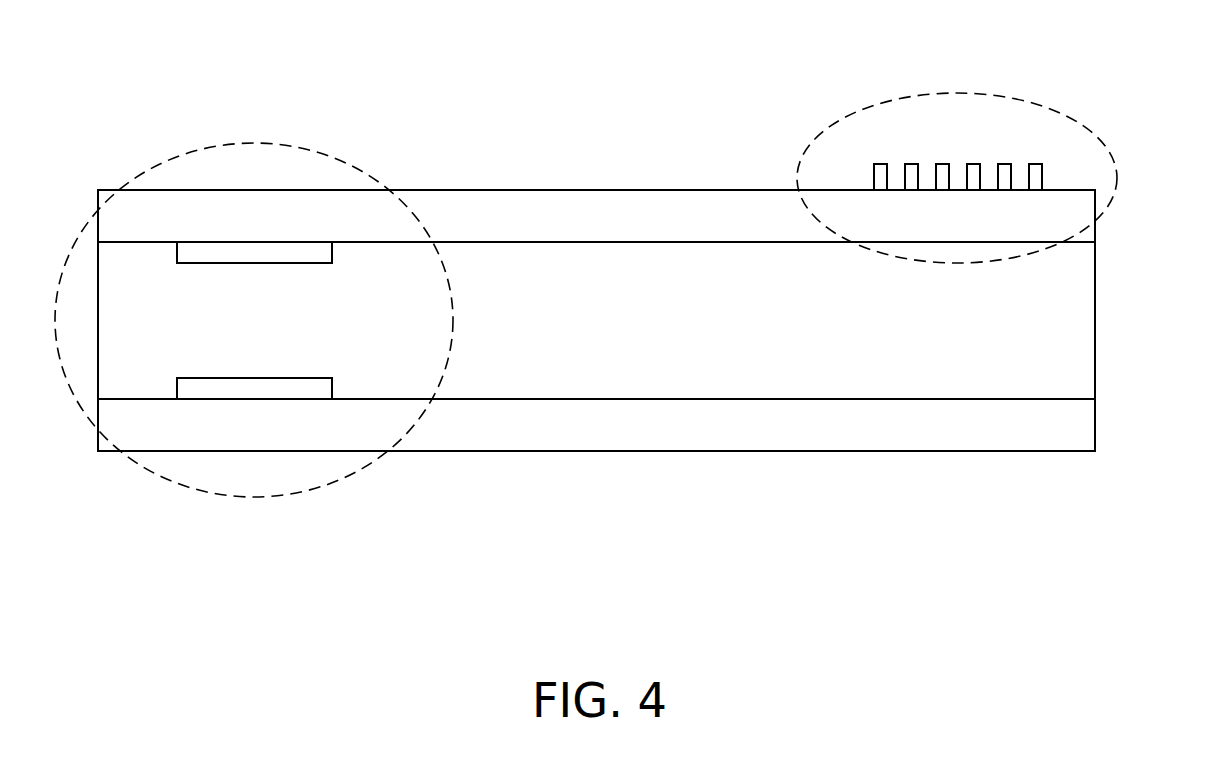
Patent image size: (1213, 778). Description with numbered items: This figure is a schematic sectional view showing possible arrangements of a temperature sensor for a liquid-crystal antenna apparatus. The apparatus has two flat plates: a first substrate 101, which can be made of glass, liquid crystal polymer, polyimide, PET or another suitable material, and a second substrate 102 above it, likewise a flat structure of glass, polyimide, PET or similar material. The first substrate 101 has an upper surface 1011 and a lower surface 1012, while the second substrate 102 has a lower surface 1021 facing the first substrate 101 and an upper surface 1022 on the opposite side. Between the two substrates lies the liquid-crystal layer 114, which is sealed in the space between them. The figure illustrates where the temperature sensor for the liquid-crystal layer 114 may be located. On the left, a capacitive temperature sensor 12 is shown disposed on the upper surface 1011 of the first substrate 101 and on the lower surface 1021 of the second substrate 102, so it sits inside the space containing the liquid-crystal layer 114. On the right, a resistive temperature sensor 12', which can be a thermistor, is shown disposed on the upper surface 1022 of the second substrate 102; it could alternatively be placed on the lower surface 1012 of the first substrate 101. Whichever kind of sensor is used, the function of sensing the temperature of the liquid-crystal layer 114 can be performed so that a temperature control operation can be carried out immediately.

The capacitive temperature sensor 12 is at (254, 282).
The resistive temperature sensor 12' is at (957, 140).
The second substrate 102 is at (624, 217).
The upper surface of the second substrate 1022 is at (524, 190).
The lower surface of the second substrate 1021 is at (522, 243).
The first substrate 101 is at (624, 423).
The upper surface of the first substrate 1011 is at (724, 399).
The lower surface of the first substrate 1012 is at (724, 451).
The liquid-crystal layer 114 is at (1053, 335).